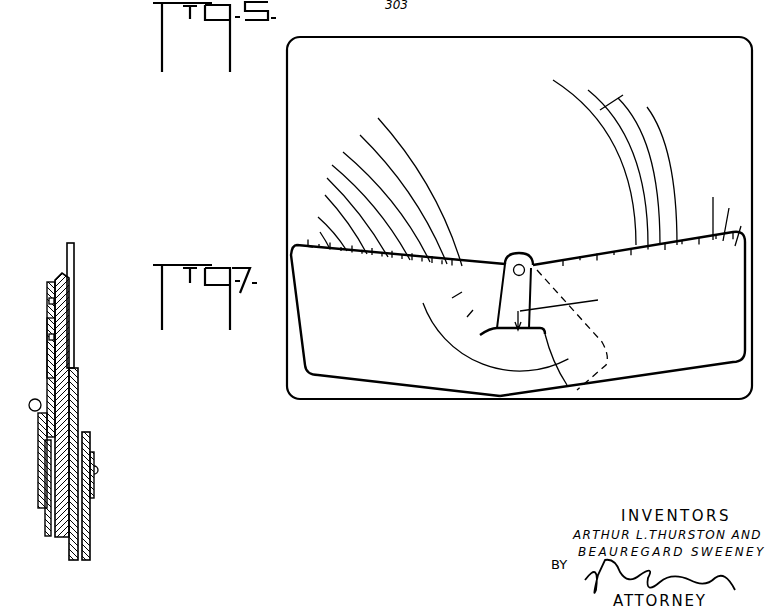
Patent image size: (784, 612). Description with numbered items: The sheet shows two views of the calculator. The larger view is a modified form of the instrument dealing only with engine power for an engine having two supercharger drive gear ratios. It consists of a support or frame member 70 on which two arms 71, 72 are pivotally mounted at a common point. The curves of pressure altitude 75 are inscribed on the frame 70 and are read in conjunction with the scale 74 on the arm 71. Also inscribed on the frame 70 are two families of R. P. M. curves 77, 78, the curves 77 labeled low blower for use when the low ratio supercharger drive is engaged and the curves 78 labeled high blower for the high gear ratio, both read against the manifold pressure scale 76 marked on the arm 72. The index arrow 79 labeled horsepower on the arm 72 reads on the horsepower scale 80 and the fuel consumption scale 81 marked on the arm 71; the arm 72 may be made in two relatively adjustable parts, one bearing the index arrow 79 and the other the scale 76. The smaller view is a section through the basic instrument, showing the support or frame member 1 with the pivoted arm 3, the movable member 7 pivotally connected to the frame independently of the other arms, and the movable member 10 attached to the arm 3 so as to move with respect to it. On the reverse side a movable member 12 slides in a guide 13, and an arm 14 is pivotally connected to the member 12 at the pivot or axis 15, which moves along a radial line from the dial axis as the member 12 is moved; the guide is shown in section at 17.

In FIG. 6, the support or frame member 70 is at (712, 50).
In FIG. 6, the arm 71 is at (330, 352).
In FIG. 6, the arm 72 is at (709, 356).
In FIG. 6, the scale 74 is at (360, 266).
In FIG. 6, the curves of pressure altitude 75 is at (377, 200).
In FIG. 6, the manifold pressure scale 76 is at (586, 263).
In FIG. 6, the R. P. M. curves 77 is at (620, 100).
In FIG. 6, the R. P. M. curves 78 is at (730, 218).
In FIG. 6, the index arrow 79 is at (518, 323).
In FIG. 6, the horsepower scale 80 is at (480, 320).
In FIG. 6, the fuel consumption scale 81 is at (480, 380).
In FIG. 7, the support or frame member 1 is at (60, 275).
In FIG. 7, the arm 3 is at (90, 530).
In FIG. 7, the movable member 7 is at (75, 255).
In FIG. 7, the movable member 10 is at (94, 491).
In FIG. 7, the movable member 12 is at (44, 527).
In FIG. 7, the guide 13 is at (47, 286).
In FIG. 7, the arm 14 is at (40, 466).
In FIG. 7, the pivot or axis 15 is at (33, 412).
In FIG. 7, the guide 17 is at (47, 322).